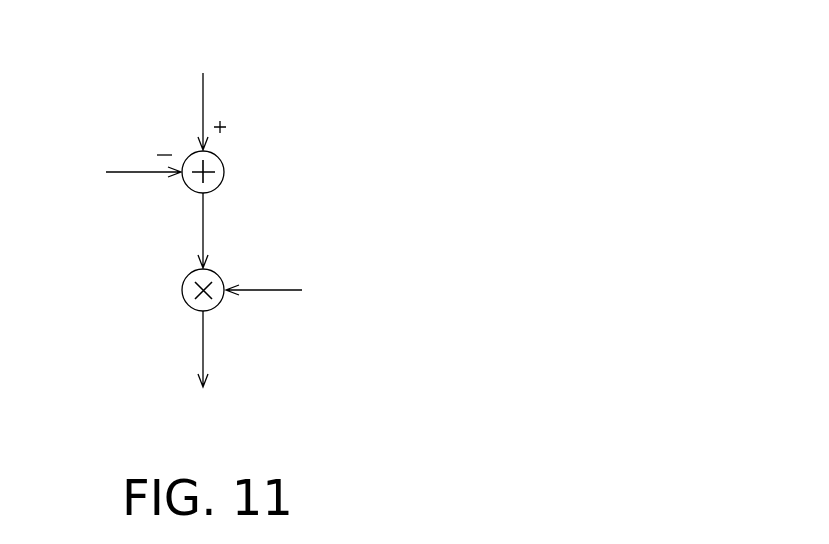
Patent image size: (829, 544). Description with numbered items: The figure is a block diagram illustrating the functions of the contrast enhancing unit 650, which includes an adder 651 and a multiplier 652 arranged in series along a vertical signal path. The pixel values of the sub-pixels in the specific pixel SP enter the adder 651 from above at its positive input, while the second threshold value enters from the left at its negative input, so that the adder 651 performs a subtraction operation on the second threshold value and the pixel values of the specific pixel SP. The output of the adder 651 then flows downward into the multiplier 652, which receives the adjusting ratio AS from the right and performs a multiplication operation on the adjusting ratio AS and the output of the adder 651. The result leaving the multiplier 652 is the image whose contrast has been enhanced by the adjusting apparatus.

The contrast enhancing unit 650 is at (277, 232).
The adder 651 is at (221, 157).
The multiplier 652 is at (185, 277).